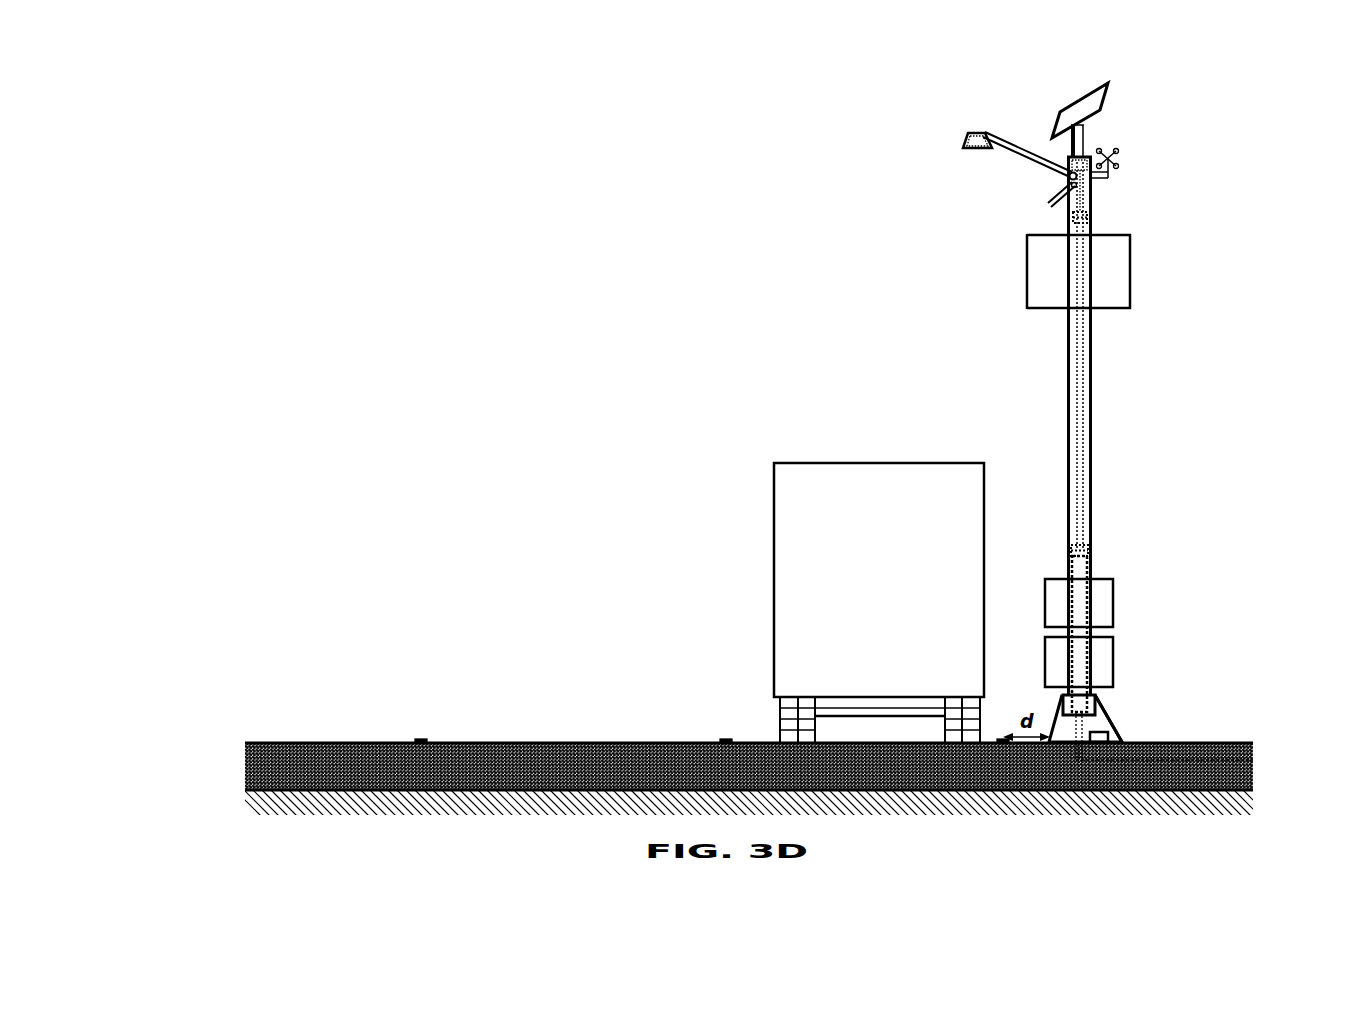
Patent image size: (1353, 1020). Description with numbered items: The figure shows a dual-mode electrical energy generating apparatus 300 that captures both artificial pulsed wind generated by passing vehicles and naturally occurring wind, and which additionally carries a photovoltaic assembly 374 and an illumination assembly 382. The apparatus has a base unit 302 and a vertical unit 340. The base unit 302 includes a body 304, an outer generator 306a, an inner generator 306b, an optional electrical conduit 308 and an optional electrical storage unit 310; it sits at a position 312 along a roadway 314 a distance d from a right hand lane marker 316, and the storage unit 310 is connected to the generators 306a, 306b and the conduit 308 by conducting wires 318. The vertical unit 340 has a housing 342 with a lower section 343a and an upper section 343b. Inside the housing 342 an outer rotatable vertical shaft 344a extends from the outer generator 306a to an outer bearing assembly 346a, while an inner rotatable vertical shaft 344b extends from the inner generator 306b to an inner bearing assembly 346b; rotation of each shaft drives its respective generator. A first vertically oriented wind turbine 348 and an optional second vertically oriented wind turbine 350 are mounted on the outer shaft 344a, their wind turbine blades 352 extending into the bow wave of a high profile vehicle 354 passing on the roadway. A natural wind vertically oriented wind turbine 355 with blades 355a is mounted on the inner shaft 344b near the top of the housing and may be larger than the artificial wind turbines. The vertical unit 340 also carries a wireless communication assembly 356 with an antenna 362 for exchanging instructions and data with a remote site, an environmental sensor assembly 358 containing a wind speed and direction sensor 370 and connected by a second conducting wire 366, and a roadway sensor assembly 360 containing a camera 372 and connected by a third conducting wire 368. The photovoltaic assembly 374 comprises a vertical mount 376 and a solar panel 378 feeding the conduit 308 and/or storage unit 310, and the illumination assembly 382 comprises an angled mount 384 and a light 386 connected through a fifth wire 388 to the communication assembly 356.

The dual-mode apparatus 300 is at (1012, 434).
The base unit 302 is at (1215, 743).
The body 304 is at (1060, 718).
The outer generator 306a is at (1097, 698).
The inner generator 306b is at (1097, 700).
The electrical conduit 308 is at (1205, 745).
The electrical storage unit 310 is at (1124, 738).
The position 312 is at (1078, 778).
The roadway 314 is at (557, 738).
The right hand lane marker 316 is at (1003, 748).
The conducting wires 318 is at (1097, 712).
The vertical unit 340 is at (1107, 434).
The housing 342 is at (1065, 385).
The lower section 343a is at (1159, 587).
The upper section 343b is at (1140, 262).
The outer rotatable vertical shaft 344a is at (1068, 565).
The inner rotatable vertical shaft 344b is at (1083, 470).
The outer bearing assembly 346a is at (1091, 548).
The inner bearing assembly 346b is at (1093, 224).
The first vertically oriented wind turbine 348 is at (1122, 645).
The second vertically oriented wind turbine 350 is at (1122, 585).
The wind turbine blades 352 is at (1113, 602).
The high profile vehicle 354 is at (879, 603).
The natural wind vertically oriented wind turbine 355 is at (1084, 279).
The blades 355a is at (1029, 265).
The wireless communication assembly 356 is at (1058, 152).
The environmental sensor assembly 358 is at (1126, 176).
The roadway sensor assembly 360 is at (1054, 184).
The antenna 362 is at (1060, 156).
The second conducting wire 366 is at (1095, 184).
The third conducting wire 368 is at (1078, 187).
The wind speed and direction sensor 370 is at (1114, 148).
The camera 372 is at (1077, 189).
The photovoltaic assembly 374 is at (1092, 106).
The vertical mount 376 is at (1086, 140).
The solar panel 378 is at (1072, 96).
The illumination assembly 382 is at (972, 120).
The angled mount 384 is at (1005, 151).
The light 386 is at (962, 133).
The fifth wire 388 is at (1063, 173).